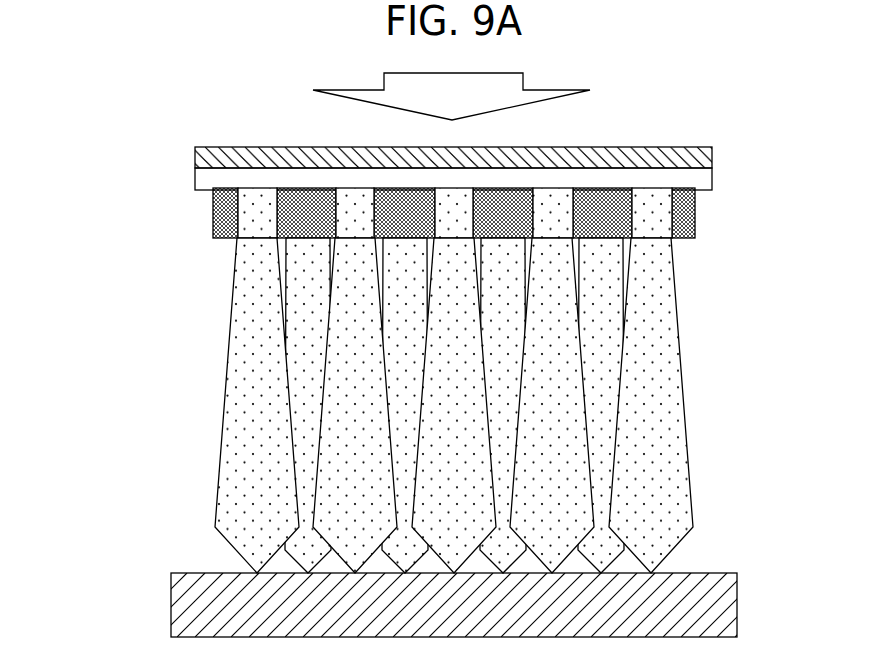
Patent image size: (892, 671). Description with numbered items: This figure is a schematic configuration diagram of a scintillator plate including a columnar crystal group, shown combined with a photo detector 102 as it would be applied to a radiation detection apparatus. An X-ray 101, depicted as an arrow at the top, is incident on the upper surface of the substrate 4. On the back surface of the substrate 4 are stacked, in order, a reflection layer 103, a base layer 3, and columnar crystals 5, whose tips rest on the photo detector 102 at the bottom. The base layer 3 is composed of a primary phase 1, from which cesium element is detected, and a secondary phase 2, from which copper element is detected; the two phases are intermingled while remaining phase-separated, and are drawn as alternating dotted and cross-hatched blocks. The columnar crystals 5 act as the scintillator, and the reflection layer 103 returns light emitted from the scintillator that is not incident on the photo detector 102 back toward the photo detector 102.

The primary phase 1 is at (656, 226).
The secondary phase 2 is at (697, 216).
The base layer 3 is at (449, 250).
The substrate 4 is at (232, 153).
The columnar crystals 5 is at (692, 402).
The X-ray 101 is at (568, 88).
The photo detector 102 is at (170, 603).
The reflection layer 103 is at (201, 180).